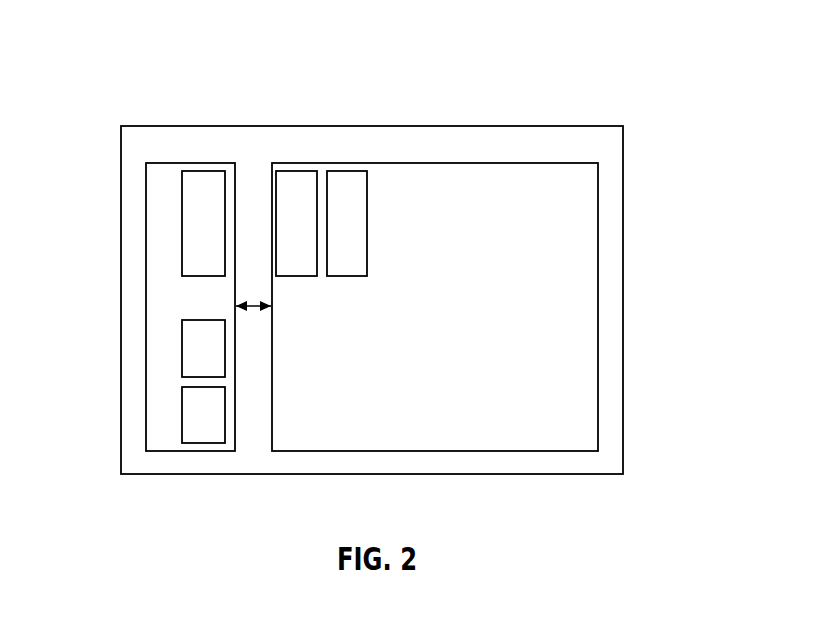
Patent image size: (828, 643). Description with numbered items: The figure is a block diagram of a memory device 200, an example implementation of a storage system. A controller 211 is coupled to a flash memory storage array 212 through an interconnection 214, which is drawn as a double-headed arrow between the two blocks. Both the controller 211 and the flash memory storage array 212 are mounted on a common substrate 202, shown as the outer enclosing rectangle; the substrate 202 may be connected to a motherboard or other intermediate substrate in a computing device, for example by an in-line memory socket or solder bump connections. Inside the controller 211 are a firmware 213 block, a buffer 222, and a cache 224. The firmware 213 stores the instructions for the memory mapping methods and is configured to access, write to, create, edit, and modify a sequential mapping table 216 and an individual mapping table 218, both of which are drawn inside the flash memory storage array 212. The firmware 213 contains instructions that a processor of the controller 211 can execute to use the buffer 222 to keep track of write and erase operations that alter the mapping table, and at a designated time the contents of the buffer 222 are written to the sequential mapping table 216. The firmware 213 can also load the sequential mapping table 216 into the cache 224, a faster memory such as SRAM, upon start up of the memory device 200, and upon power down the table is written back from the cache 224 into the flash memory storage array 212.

The memory device 200 is at (604, 58).
The substrate 202 is at (612, 432).
The controller 211 is at (157, 198).
The flash memory storage array 212 is at (580, 257).
The firmware 213 is at (203, 178).
The interconnection 214 is at (235, 306).
The sequential mapping table 216 is at (295, 178).
The individual mapping table 218 is at (348, 178).
The buffer 222 is at (191, 412).
The cache 224 is at (191, 347).